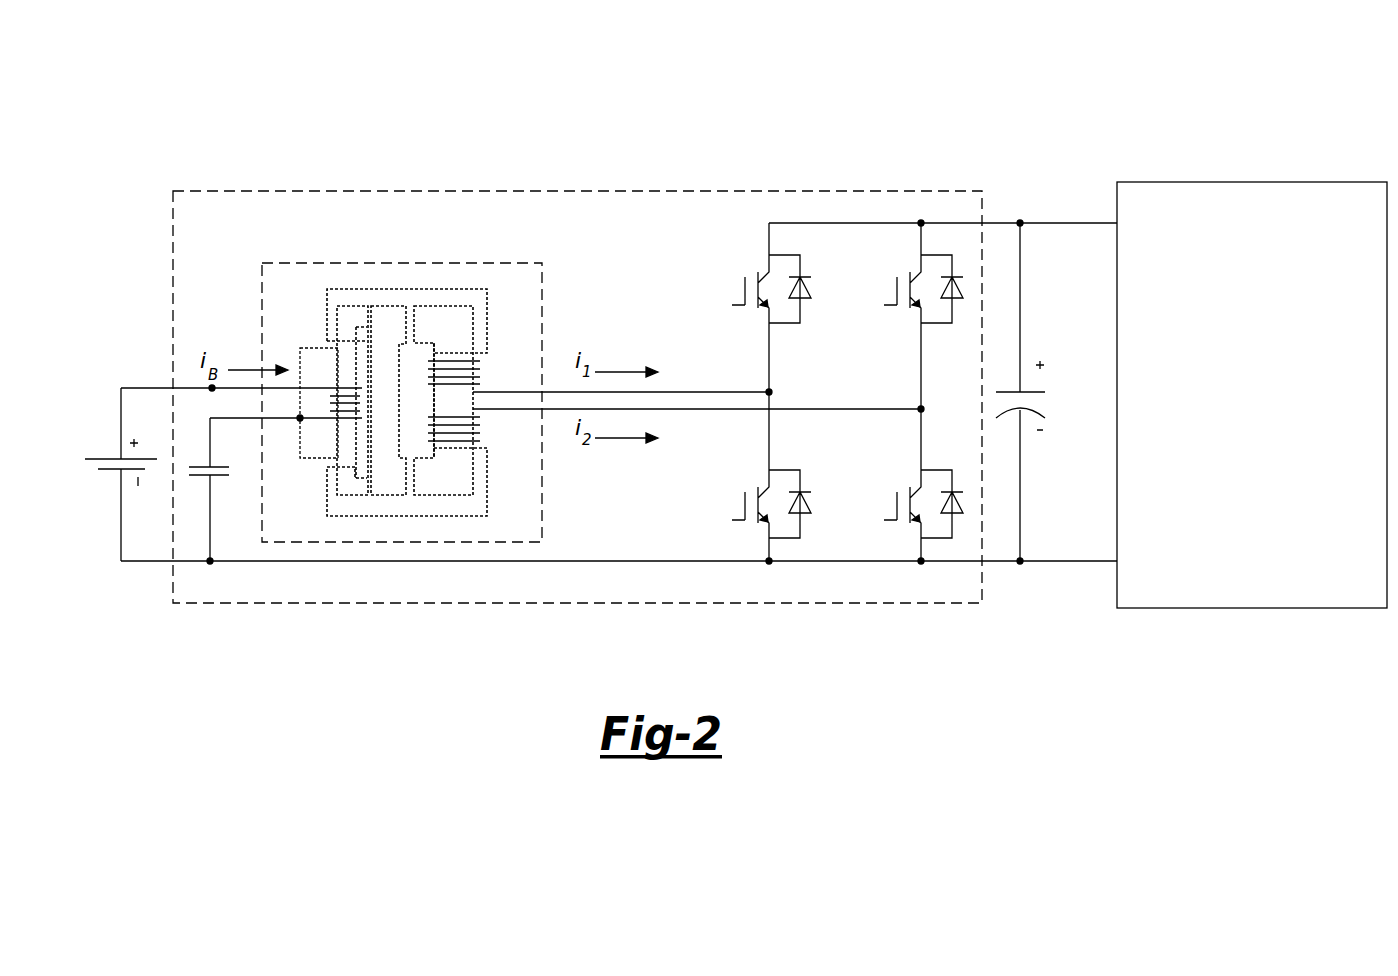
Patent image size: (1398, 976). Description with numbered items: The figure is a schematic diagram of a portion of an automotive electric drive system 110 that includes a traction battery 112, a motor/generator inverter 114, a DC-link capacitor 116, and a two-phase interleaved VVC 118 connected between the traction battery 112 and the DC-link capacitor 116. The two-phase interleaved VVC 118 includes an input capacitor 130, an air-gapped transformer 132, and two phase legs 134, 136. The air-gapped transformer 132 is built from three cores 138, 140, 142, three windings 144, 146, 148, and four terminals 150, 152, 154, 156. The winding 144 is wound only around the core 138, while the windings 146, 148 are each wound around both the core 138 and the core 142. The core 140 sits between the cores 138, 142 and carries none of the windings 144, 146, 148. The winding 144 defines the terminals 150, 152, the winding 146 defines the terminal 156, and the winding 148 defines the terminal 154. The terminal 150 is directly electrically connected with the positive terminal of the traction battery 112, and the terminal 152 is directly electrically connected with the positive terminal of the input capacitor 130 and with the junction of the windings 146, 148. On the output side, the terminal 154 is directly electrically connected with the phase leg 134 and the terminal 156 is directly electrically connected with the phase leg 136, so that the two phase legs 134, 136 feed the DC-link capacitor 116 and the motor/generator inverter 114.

The automotive electric drive system 110 is at (147, 293).
The traction battery 112 is at (112, 459).
The motor/generator inverter 114 is at (1252, 182).
The DC-link capacitor 116 is at (1012, 390).
The two-phase interleaved VVC 118 is at (577, 191).
The input capacitor 130 is at (204, 465).
The air-gapped transformer 132 is at (509, 262).
The phase leg 134 is at (769, 438).
The phase leg 136 is at (921, 347).
The core 138 is at (350, 306).
The core 140 is at (389, 306).
The core 142 is at (444, 306).
The winding 144 is at (308, 372).
The winding 146 is at (400, 516).
The winding 148 is at (488, 308).
The terminal 150 is at (210, 388).
The terminal 152 is at (298, 418).
The terminal 154 is at (771, 391).
The terminal 156 is at (920, 412).